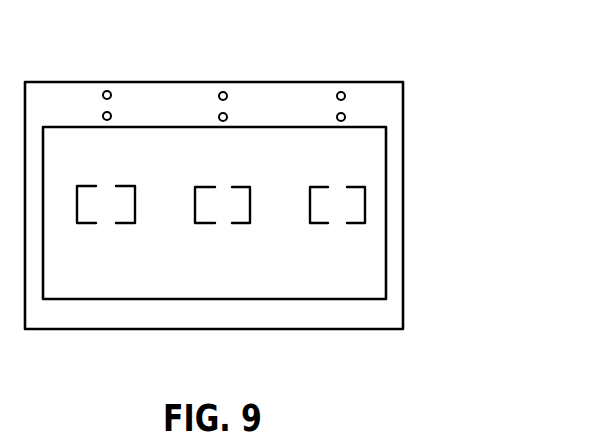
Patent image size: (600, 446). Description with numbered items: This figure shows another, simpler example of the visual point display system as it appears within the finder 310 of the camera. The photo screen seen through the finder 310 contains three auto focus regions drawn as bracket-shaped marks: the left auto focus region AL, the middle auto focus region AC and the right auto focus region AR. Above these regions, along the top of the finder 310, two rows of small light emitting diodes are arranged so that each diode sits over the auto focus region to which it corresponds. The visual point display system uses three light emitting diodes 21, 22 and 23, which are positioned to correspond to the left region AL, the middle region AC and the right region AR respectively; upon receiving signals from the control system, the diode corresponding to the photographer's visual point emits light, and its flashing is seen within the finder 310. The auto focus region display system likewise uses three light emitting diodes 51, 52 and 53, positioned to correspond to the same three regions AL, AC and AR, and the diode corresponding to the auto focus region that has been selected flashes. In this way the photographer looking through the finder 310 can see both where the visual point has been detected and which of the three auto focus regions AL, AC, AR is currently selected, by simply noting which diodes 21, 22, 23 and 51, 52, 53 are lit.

The finder 310 is at (404, 305).
The light emitting diode 51 is at (107, 90).
The light emitting diode 21 is at (112, 116).
The light emitting diode 52 is at (224, 91).
The light emitting diode 22 is at (228, 117).
The light emitting diode 53 is at (342, 91).
The light emitting diode 23 is at (346, 117).
The left auto focus region AL is at (85, 224).
The middle auto focus region AC is at (215, 226).
The right auto focus region AR is at (337, 227).